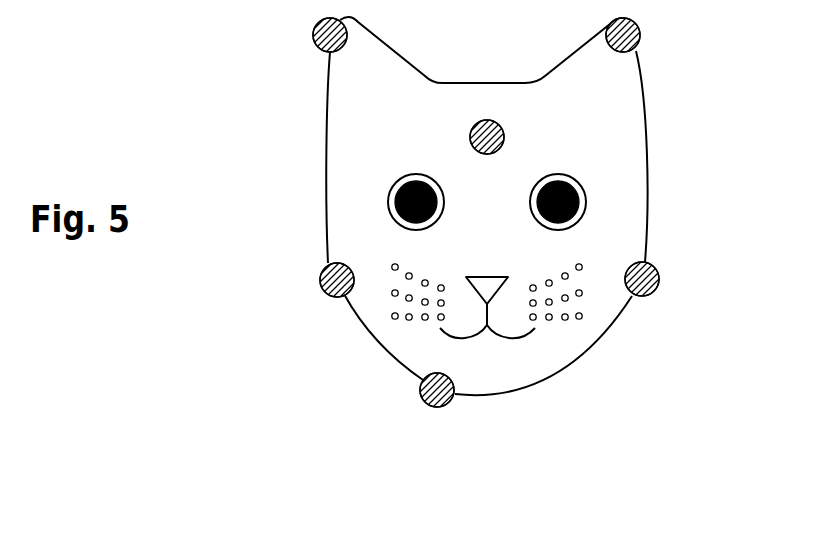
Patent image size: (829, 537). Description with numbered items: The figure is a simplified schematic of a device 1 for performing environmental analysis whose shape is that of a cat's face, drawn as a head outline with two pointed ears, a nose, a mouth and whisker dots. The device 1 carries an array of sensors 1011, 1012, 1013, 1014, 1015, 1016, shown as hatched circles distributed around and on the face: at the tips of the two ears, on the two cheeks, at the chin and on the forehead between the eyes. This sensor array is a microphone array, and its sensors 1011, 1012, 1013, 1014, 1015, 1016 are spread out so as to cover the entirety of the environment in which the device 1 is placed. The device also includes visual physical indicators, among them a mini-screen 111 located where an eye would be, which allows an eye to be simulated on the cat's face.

The device for performing environmental analysis 1 is at (650, 168).
The mini-screen 111 is at (395, 207).
The sensor 1011 is at (313, 35).
The sensor 1012 is at (640, 35).
The sensor 1013 is at (660, 278).
The sensor 1014 is at (425, 393).
The sensor 1015 is at (320, 280).
The sensor 1016 is at (487, 120).